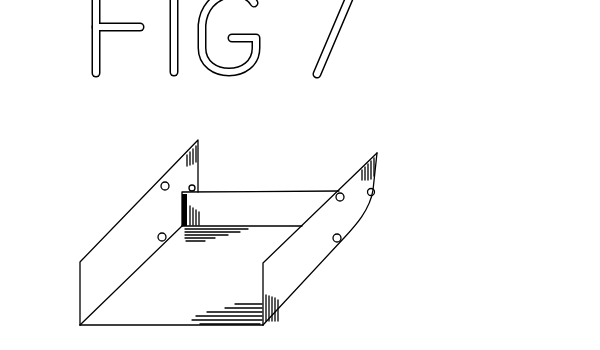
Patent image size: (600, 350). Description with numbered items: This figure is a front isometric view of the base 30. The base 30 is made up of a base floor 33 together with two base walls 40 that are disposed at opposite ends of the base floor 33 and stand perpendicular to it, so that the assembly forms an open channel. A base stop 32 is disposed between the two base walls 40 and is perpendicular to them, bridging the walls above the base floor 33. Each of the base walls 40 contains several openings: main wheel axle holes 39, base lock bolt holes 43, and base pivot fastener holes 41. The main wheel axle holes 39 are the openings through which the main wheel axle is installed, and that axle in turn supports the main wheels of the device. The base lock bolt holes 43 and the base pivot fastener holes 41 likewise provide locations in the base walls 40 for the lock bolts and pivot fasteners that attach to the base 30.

The base 30 is at (113, 182).
The base stop 32 is at (258, 191).
The base floor 33 is at (238, 310).
The main wheel axle holes 39 is at (193, 184).
The base walls 40 is at (101, 242).
The base pivot fastener holes 41 is at (166, 235).
The base lock bolt holes 43 is at (165, 181).